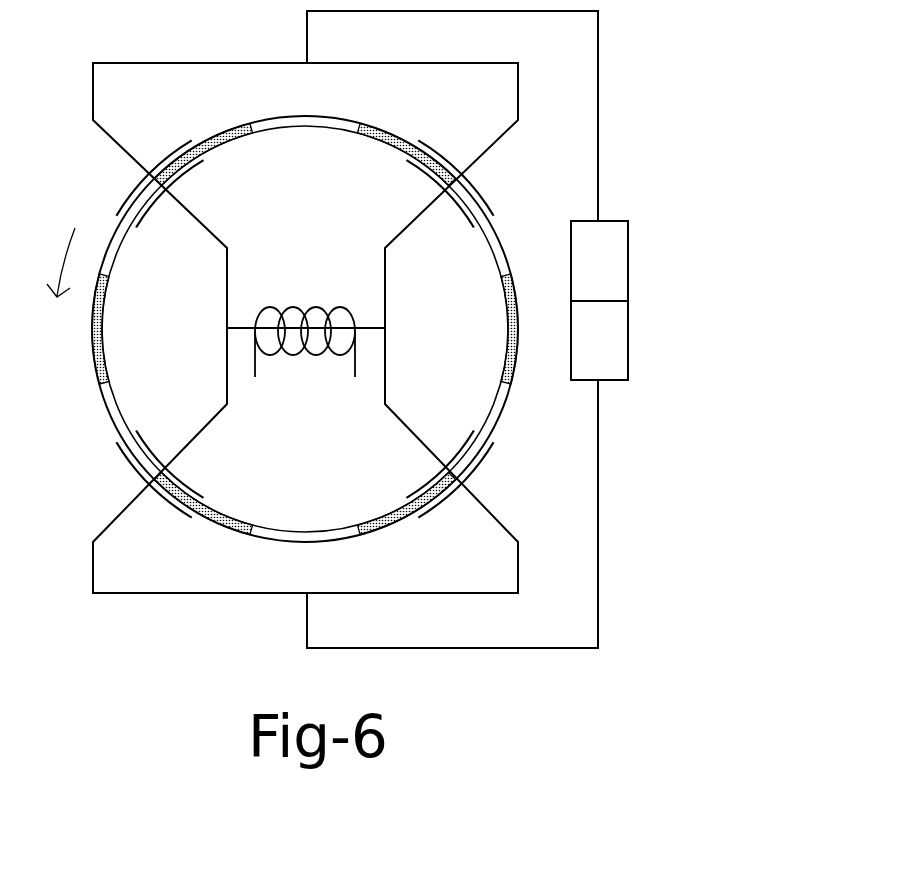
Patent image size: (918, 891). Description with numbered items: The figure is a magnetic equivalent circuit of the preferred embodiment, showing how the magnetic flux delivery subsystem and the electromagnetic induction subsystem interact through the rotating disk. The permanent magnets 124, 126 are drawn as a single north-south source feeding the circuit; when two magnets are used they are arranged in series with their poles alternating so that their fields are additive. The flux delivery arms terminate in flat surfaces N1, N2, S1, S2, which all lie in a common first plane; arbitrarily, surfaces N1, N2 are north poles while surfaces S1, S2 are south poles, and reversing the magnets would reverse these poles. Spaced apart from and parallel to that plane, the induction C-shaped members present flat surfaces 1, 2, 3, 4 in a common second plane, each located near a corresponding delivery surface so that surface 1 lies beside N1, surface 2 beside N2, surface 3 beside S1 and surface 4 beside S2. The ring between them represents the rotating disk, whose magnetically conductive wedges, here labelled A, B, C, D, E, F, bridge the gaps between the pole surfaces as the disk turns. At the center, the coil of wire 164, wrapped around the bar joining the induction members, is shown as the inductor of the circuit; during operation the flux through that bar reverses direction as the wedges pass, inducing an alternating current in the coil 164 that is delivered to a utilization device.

The permanent magnet segment A is at (392, 138).
The permanent magnet segment B is at (518, 302).
The permanent magnet segment C is at (397, 520).
The permanent magnet segment D is at (220, 522).
The permanent magnet segment E is at (92, 342).
The permanent magnet segment F is at (233, 130).
The flat surface N1 is at (130, 188).
The flat surface N2 is at (475, 185).
The flat surface S1 is at (135, 475).
The flat surface S2 is at (475, 470).
The flat surface 1 is at (150, 212).
The flat surface 2 is at (458, 210).
The flat surface 3 is at (167, 505).
The flat surface 4 is at (452, 455).
The coil of wire 164 is at (322, 305).
The permanent magnet 124 is at (669, 300).
The permanent magnet 126 is at (620, 277).